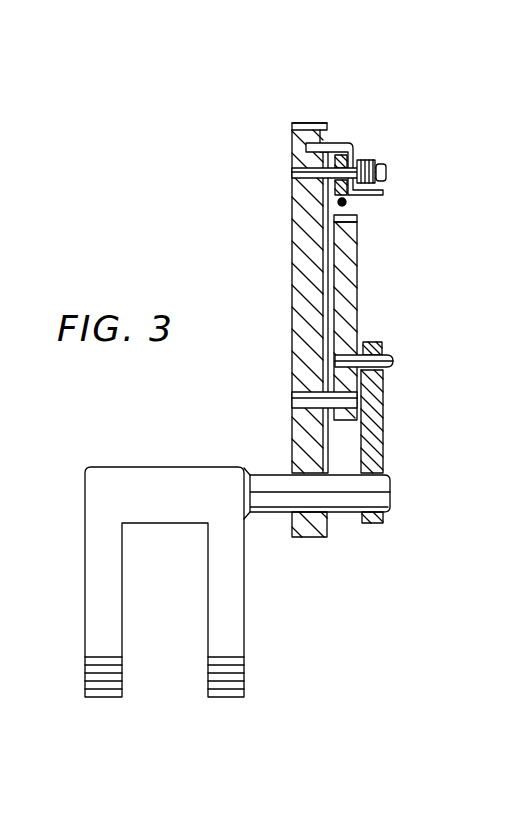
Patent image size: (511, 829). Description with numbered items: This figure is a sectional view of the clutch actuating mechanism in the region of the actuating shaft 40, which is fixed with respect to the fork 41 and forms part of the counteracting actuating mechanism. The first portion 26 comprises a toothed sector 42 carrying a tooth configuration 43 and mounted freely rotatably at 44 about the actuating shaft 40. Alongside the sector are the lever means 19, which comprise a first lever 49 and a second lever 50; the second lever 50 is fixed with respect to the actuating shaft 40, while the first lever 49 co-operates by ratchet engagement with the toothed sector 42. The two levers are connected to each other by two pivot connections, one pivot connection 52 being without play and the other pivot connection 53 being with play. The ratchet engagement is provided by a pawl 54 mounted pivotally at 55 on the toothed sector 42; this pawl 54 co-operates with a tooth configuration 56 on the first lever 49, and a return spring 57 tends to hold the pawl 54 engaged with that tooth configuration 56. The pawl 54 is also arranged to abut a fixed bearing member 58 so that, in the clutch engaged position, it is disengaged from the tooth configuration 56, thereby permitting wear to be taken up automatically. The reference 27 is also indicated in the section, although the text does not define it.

The lever means 19 is at (377, 321).
The first portion 26 is at (328, 112).
The bracket member 27 is at (382, 262).
The actuating shaft 40 is at (350, 503).
The fork 41 is at (238, 627).
The toothed sector 42 is at (295, 281).
The tooth configuration 43 is at (296, 124).
The rotatable mounting 44 is at (312, 505).
The first lever 49 is at (352, 283).
The second lever 50 is at (370, 438).
The pivot connection 52 is at (292, 397).
The pivot connection 53 is at (393, 360).
The pawl 54 is at (342, 160).
The pivot mounting 55 is at (387, 173).
The tooth configuration 56 is at (360, 218).
The return spring 57 is at (369, 162).
The fixed bearing member 58 is at (348, 205).